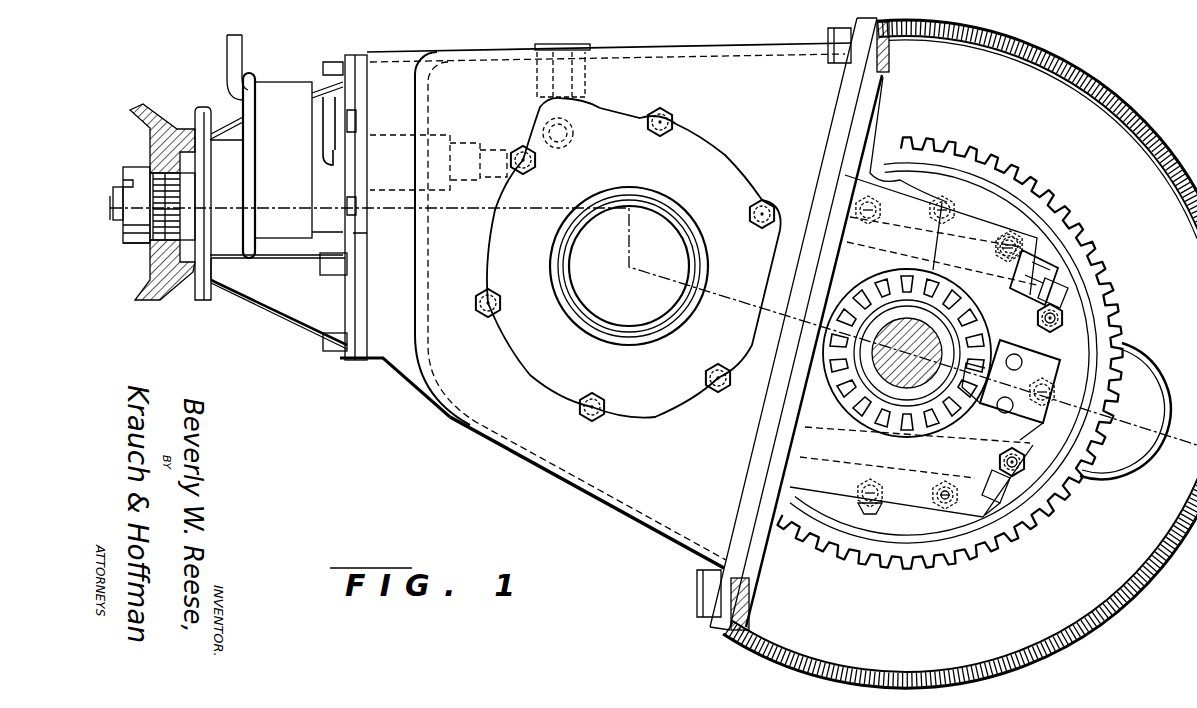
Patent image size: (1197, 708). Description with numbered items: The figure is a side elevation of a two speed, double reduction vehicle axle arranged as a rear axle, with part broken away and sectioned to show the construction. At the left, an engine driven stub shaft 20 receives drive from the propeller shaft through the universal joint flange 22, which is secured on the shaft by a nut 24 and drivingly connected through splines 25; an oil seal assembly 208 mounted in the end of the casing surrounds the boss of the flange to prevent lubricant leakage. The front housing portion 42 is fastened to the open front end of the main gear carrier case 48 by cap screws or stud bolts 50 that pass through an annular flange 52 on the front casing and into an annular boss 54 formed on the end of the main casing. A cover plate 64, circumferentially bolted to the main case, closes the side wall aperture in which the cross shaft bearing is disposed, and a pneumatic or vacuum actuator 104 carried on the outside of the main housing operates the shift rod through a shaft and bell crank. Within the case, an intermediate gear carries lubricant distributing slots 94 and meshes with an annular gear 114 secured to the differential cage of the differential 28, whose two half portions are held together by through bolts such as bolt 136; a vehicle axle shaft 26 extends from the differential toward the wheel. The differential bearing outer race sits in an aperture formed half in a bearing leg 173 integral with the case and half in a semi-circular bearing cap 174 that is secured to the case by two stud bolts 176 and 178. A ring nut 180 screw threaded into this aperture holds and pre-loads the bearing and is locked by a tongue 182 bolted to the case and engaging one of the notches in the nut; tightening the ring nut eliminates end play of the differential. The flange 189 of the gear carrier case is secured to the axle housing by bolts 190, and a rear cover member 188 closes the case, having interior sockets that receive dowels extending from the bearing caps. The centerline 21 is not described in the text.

The stub shaft 20 is at (118, 200).
The axis centerline 21 is at (645, 318).
The universal joint flange 22 is at (158, 297).
The nut 24 is at (138, 167).
The splines 25 is at (135, 247).
The vehicle axle shaft 26 is at (887, 368).
The differential 28 is at (1072, 197).
The front housing portion 42 is at (293, 320).
The main gear carrier case 48 is at (472, 52).
The cap screws or stud bolts 50 is at (327, 258).
The annular flange 52 is at (357, 350).
The annular boss 54 is at (410, 380).
The cover plate 64 is at (540, 377).
The slots 94 is at (580, 133).
The pneumatic or vacuum actuator 104 is at (280, 78).
The annular gear 114 is at (986, 555).
The through bolt 136 is at (1064, 322).
The bearing leg 173 is at (828, 487).
The semi-circular bearing cap 174 is at (913, 483).
The stud bolt 176 is at (1060, 285).
The stud bolt 178 is at (1023, 510).
The ring nut 180 is at (868, 432).
The tongue 182 is at (945, 430).
The rear cover member 188 is at (1057, 60).
The flange 189 is at (833, 143).
The bolts 190 is at (697, 603).
The oil seal assembly 208 is at (198, 117).